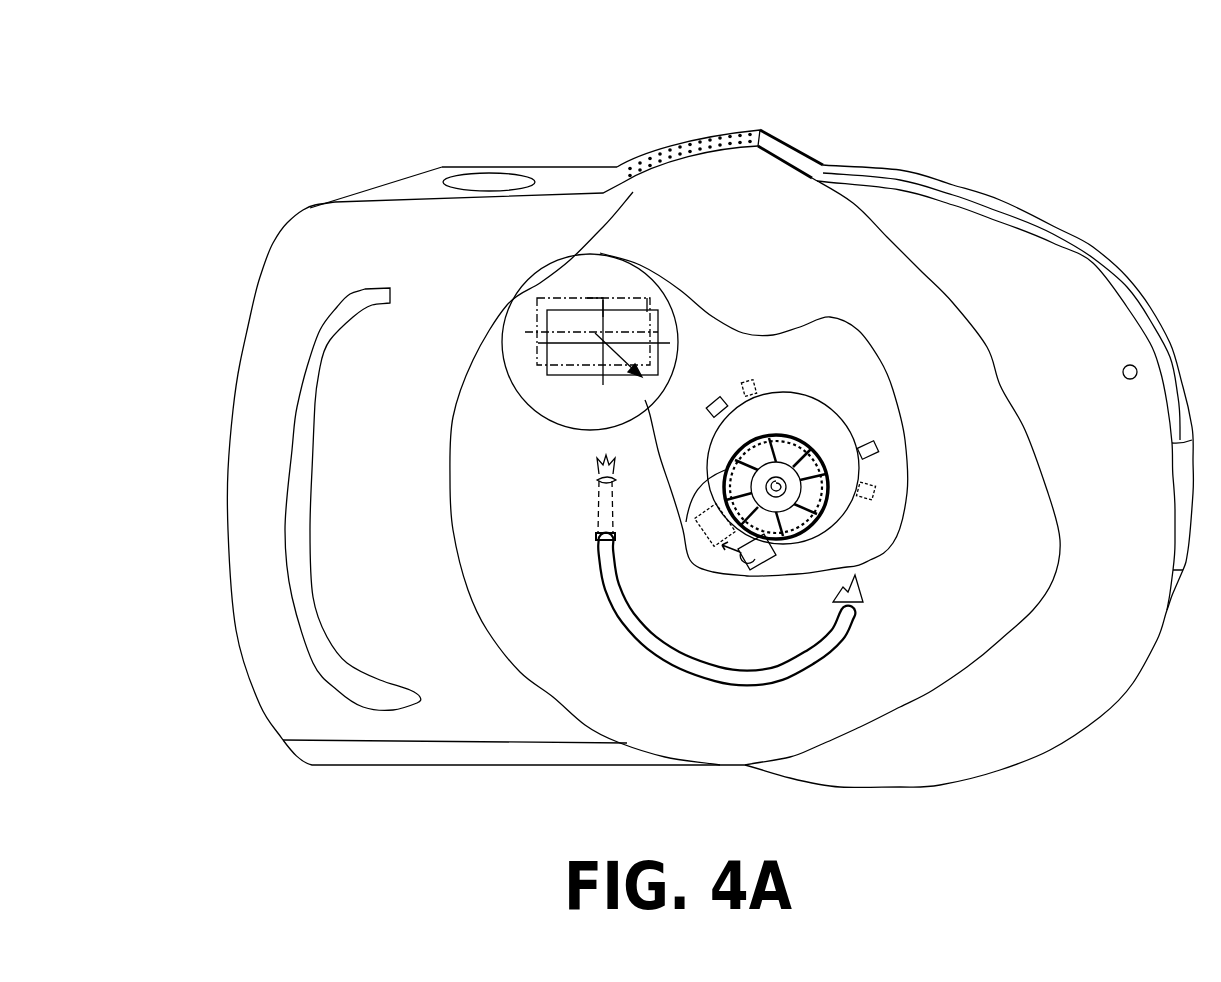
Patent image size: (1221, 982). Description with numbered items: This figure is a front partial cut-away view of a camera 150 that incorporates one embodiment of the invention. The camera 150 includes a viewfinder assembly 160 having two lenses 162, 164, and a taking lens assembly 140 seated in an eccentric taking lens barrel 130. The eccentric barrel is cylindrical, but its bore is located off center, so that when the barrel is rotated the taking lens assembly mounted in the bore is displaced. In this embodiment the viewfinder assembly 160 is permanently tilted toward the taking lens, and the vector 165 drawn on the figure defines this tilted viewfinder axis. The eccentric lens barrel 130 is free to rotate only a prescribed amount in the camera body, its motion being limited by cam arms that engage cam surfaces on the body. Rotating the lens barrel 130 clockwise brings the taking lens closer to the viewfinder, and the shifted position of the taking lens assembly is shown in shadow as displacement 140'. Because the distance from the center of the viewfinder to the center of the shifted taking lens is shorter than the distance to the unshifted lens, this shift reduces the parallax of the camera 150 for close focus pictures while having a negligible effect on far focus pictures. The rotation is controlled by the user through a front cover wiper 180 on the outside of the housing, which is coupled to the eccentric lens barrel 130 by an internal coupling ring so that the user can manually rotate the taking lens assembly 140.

The camera 150 is at (258, 110).
The lens 164 is at (530, 294).
The lens 162 is at (662, 328).
The eccentric taking lens barrel 130 is at (832, 412).
The viewfinder assembly 160 is at (525, 407).
The vector 165 is at (613, 378).
The taking lens assembly 140 is at (840, 487).
The displaced taking lens assembly 140' is at (754, 414).
The front cover wiper 180 is at (667, 665).